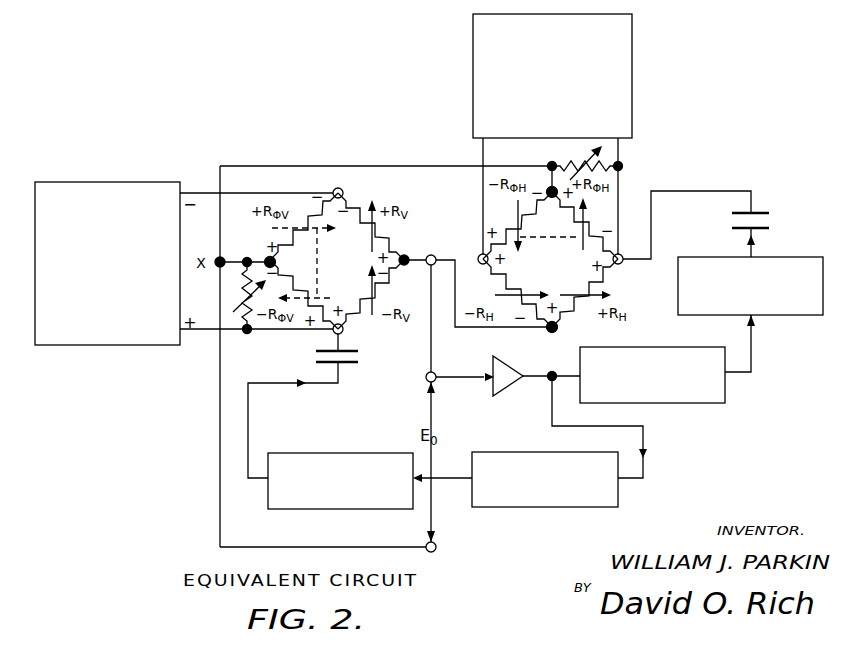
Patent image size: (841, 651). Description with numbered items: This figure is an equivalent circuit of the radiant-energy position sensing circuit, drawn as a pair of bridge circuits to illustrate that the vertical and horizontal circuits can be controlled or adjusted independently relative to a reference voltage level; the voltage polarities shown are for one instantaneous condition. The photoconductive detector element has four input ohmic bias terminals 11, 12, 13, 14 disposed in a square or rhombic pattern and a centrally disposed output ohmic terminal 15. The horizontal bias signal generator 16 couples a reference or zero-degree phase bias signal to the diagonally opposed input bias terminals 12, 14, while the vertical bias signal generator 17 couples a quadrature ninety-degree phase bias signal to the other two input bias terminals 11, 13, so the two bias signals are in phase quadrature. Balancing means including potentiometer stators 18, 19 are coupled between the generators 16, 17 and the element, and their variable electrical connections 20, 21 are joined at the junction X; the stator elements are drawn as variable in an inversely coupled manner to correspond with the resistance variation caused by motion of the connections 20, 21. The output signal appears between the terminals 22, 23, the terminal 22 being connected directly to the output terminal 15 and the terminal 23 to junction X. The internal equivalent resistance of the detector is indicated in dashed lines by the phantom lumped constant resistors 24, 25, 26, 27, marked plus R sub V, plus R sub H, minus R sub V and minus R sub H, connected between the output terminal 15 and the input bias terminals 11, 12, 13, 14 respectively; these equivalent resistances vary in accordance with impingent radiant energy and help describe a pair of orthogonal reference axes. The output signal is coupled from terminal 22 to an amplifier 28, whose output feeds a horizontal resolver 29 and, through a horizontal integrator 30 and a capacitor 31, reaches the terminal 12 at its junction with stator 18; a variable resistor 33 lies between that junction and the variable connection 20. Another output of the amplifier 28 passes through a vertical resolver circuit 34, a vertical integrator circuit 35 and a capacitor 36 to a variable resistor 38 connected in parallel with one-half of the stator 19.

The input ohmic bias terminal 11 is at (332, 190).
The input ohmic bias terminal 12 is at (621, 254).
The input ohmic bias terminal 13 is at (331, 333).
The input ohmic bias terminal 14 is at (478, 256).
The output ohmic terminal 15 is at (431, 254).
The horizontal bias signal generator 16 is at (632, 67).
The vertical bias signal generator 17 is at (122, 181).
The potentiometer stator 18 is at (562, 228).
The potentiometer stator 19 is at (297, 282).
The variable electrical connection 20 is at (540, 183).
The variable electrical connection 21 is at (266, 256).
The terminal 22 is at (438, 372).
The terminal 23 is at (440, 545).
The phantom lumped constant resistor 24 is at (354, 207).
The phantom lumped constant resistor 25 is at (602, 284).
The phantom lumped constant resistor 26 is at (383, 283).
The phantom lumped constant resistor 27 is at (512, 283).
The amplifier 28 is at (505, 388).
The horizontal resolver 29 is at (727, 396).
The horizontal integrator 30 is at (780, 316).
The capacitor 31 is at (760, 213).
The variable resistor 33 is at (578, 160).
The vertical resolver circuit 34 is at (620, 493).
The vertical integrator circuit 35 is at (318, 453).
The capacitor 36 is at (360, 365).
The variable resistor 38 is at (245, 295).